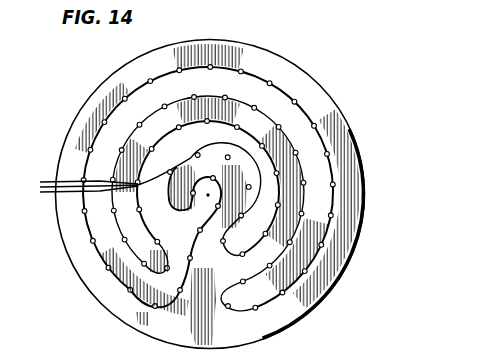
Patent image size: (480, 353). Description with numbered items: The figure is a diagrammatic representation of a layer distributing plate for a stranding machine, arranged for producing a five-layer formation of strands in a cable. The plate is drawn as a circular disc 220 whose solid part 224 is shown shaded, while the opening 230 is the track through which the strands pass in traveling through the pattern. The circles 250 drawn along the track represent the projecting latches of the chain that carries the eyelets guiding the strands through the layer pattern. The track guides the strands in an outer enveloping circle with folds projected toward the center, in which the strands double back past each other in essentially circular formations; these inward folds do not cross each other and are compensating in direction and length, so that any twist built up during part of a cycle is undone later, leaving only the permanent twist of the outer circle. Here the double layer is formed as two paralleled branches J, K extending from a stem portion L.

The circular plate 220 is at (307, 69).
The solid part 224 is at (250, 204).
The opening 230 is at (273, 283).
The projecting latches 250 is at (75, 187).
The first paralleled branch J is at (100, 217).
The second paralleled branch K is at (147, 195).
The stem portion L is at (182, 263).